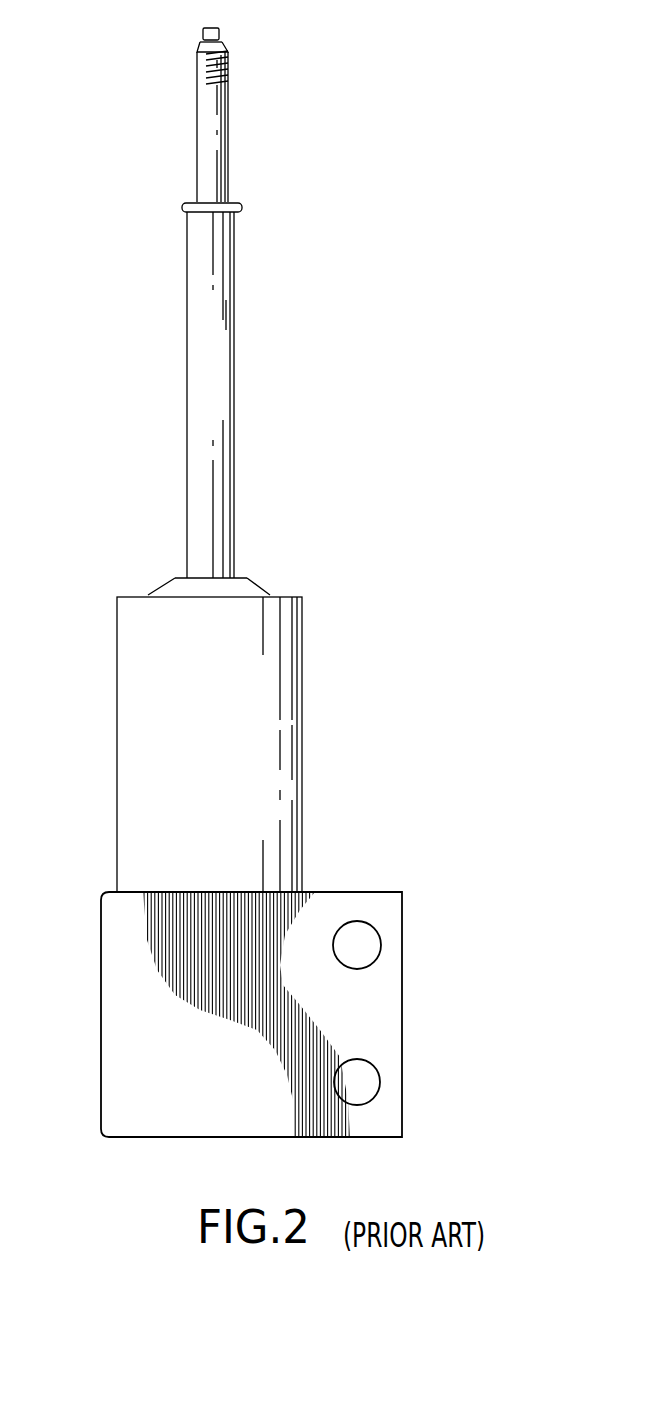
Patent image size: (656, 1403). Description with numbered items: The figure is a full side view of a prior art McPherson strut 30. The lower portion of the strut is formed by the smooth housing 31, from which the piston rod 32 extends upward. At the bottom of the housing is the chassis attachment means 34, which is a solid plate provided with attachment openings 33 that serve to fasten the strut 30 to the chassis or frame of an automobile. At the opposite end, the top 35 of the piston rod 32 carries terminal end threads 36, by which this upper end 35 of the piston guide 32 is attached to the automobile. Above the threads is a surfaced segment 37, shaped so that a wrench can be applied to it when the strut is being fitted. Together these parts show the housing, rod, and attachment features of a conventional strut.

The McPherson strut 30 is at (396, 304).
The smooth housing 31 is at (117, 683).
The piston rod 32 is at (235, 250).
The attachment openings 33 is at (357, 945).
The chassis attachment means 34 is at (402, 1012).
The top of the piston rod 35 is at (196, 136).
The terminal end threads 36 is at (198, 79).
The surfaced segment 37 is at (200, 38).